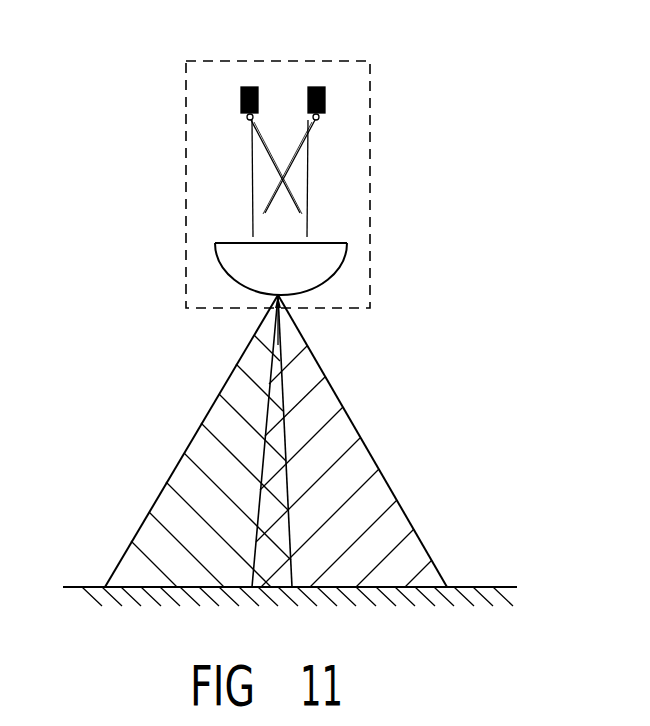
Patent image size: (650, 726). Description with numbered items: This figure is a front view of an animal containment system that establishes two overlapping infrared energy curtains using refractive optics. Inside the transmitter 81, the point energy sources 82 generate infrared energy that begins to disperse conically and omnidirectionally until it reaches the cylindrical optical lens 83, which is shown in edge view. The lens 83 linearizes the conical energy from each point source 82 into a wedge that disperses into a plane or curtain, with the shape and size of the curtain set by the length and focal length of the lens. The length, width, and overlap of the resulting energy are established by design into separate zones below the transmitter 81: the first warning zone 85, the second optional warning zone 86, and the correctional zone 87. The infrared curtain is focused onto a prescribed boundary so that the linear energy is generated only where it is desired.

The transmitter 81 is at (370, 183).
The point energy sources 82 is at (258, 78).
The cylindrical optical lens 83 is at (208, 253).
The first warning zone 85 is at (337, 437).
The second optional warning zone 86 is at (276, 555).
The correctional zone 87 is at (222, 487).